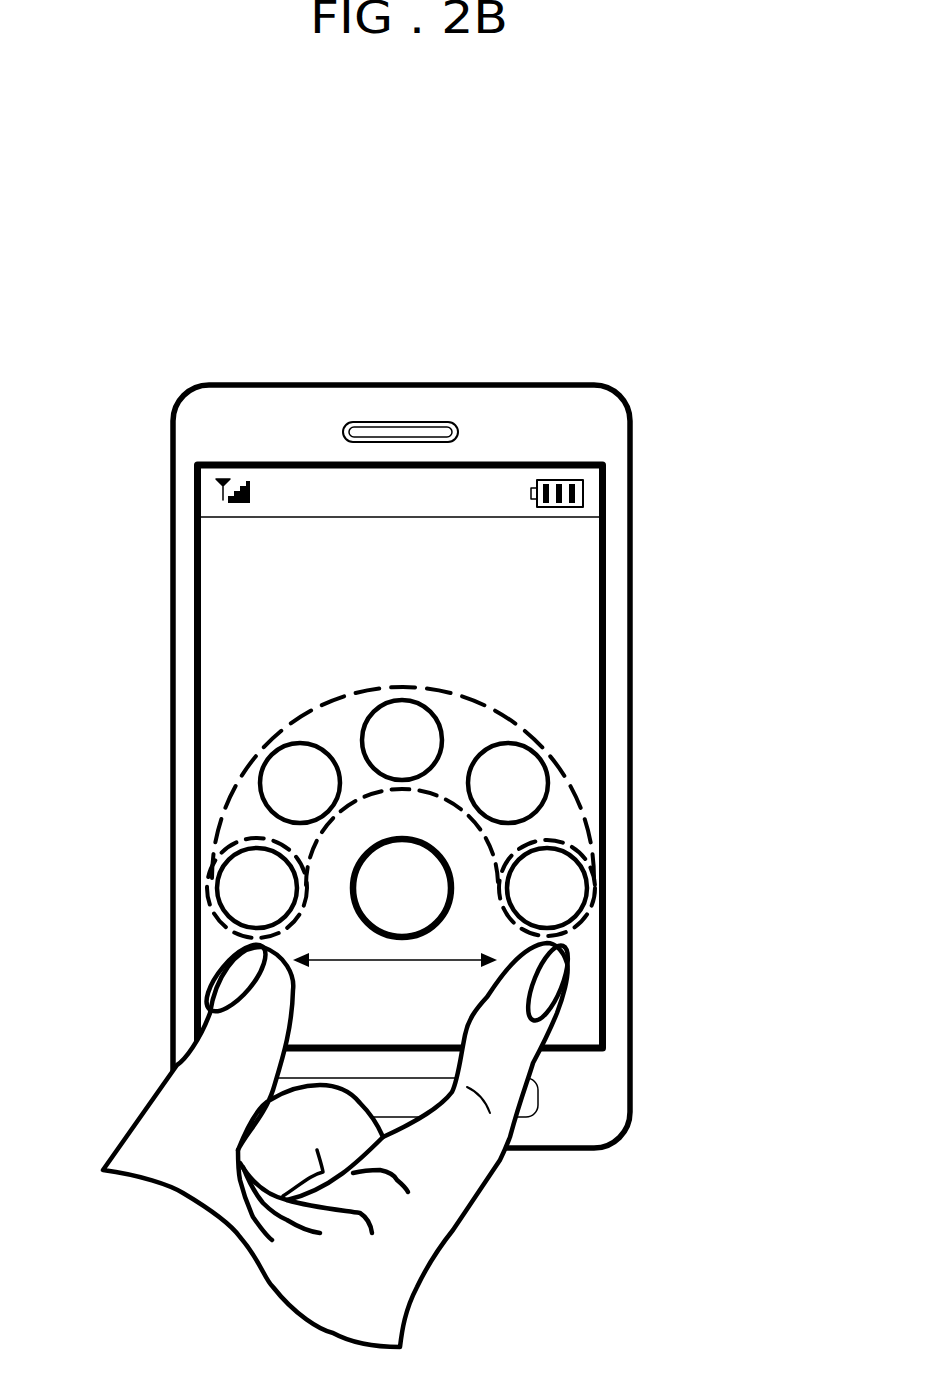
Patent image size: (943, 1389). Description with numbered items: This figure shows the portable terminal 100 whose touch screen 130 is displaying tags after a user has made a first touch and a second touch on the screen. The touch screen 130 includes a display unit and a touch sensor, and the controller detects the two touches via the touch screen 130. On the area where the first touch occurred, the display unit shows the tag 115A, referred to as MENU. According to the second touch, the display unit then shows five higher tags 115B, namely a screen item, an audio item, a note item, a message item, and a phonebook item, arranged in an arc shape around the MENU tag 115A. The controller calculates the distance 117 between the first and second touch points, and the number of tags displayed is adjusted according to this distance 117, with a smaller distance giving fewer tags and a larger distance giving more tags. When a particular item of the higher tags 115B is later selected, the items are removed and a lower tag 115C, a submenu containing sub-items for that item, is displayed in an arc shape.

The portable terminal 100 is at (273, 385).
The touch screen 130 is at (510, 578).
The tag 115A is at (355, 863).
The higher tags 115B is at (513, 755).
The lower tag 115C is at (571, 792).
The distance 117 is at (400, 962).